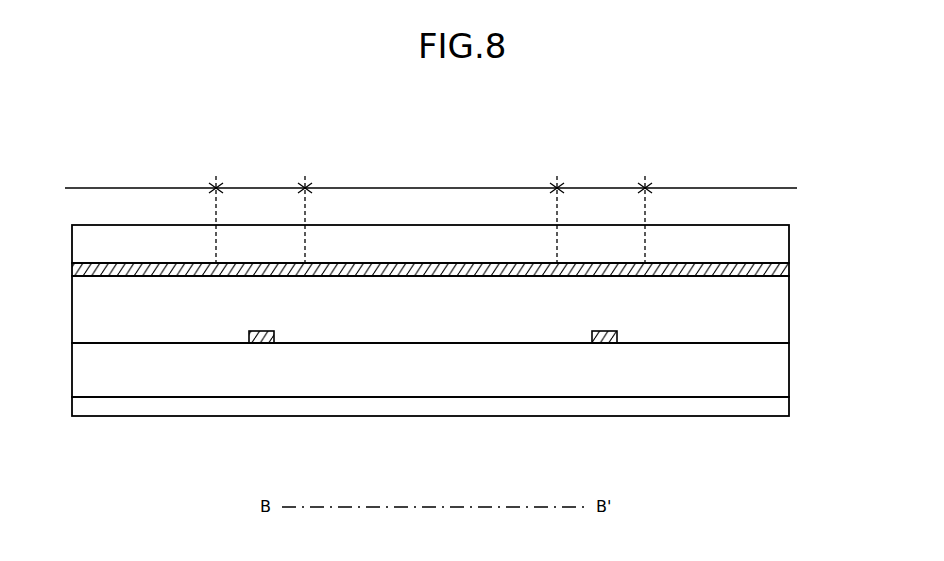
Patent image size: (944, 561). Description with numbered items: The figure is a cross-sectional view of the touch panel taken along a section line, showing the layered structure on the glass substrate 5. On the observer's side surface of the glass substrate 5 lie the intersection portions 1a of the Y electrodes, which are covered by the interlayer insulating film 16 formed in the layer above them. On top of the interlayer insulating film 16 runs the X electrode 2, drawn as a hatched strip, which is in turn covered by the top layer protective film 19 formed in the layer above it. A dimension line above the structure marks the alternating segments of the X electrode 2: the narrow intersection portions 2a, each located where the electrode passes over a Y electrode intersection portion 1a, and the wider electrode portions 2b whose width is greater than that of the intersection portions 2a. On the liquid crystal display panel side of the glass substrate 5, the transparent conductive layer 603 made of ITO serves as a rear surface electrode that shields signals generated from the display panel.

The electrode portion 2b is at (431, 177).
The intersection portion 2a is at (430, 212).
The top layer protective film 19 is at (750, 246).
The X electrode 2 is at (757, 268).
The interlayer insulating film 16 is at (758, 313).
The glass substrate 5 is at (758, 370).
The transparent conductive layer 603 is at (725, 407).
The intersection portion 1a is at (262, 343).